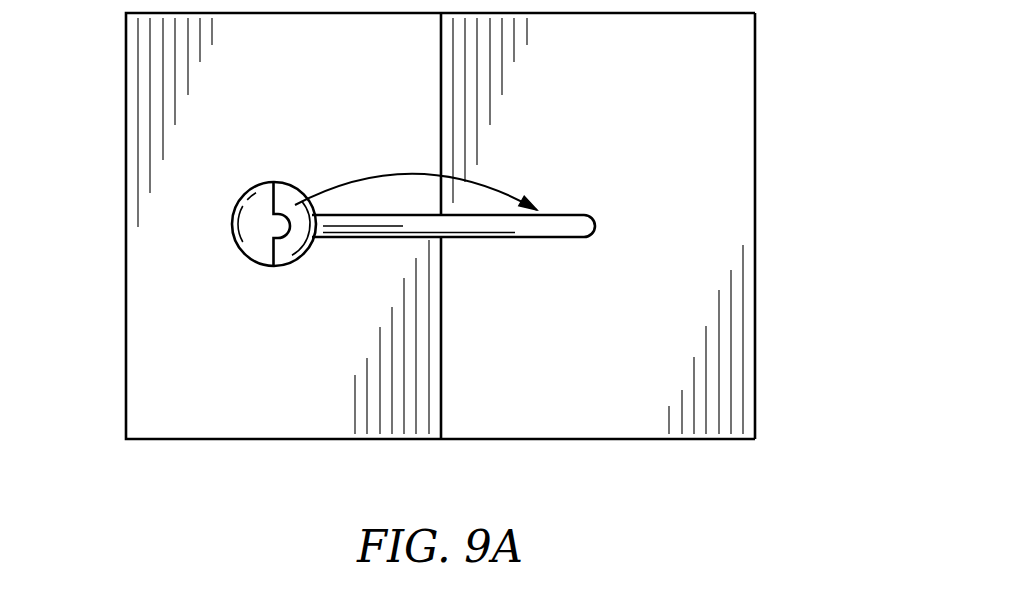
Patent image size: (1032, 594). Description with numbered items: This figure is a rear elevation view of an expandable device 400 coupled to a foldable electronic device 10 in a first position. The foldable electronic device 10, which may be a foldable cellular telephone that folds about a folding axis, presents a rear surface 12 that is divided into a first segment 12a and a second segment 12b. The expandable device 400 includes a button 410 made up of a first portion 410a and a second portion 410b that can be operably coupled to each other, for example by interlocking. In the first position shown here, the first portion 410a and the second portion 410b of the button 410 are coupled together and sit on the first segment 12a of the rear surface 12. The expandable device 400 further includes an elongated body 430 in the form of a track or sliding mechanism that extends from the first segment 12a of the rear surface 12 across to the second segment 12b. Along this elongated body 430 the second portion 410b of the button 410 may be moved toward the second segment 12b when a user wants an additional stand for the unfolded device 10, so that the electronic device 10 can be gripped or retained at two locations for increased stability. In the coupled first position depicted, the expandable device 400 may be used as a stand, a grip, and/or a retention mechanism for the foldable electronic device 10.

The expandable device 400 is at (460, 283).
The rear surface 12 is at (485, 283).
The first segment of the rear surface 12a is at (320, 122).
The second segment of the rear surface 12b is at (636, 122).
The foldable electronic device 10 is at (757, 348).
The button 410 is at (277, 231).
The first portion of the button 410a is at (252, 216).
The second portion of the button 410b is at (300, 205).
The elongated body 430 is at (587, 226).